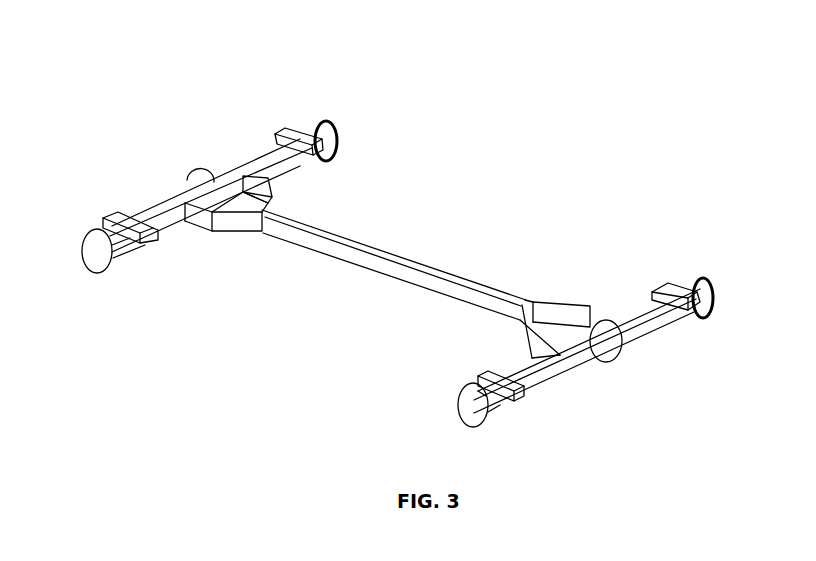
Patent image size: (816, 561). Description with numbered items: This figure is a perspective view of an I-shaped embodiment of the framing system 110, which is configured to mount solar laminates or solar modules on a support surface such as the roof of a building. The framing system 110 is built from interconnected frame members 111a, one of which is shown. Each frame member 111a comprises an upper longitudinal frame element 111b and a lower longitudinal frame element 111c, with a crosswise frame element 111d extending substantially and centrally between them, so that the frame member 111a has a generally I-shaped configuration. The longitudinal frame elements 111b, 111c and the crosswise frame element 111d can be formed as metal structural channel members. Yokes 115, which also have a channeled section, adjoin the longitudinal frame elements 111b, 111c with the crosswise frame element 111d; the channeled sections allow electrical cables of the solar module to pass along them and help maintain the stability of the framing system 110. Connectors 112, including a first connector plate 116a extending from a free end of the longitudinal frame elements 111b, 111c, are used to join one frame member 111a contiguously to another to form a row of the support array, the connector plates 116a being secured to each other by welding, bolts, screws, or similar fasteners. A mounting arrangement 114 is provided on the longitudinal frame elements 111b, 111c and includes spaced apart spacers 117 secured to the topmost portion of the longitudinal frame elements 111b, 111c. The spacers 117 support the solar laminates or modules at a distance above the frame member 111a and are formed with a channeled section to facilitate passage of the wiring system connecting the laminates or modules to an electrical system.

The framing system 110 is at (440, 95).
The frame member 111a is at (413, 234).
The upper longitudinal frame element 111b is at (282, 228).
The lower longitudinal frame element 111c is at (500, 310).
The crosswise frame element 111d is at (162, 218).
The connector 112 is at (478, 403).
The mounting arrangement 114 is at (653, 290).
The yoke 115 is at (276, 197).
The first connector plate 116a is at (207, 178).
The spacer 117 is at (302, 130).